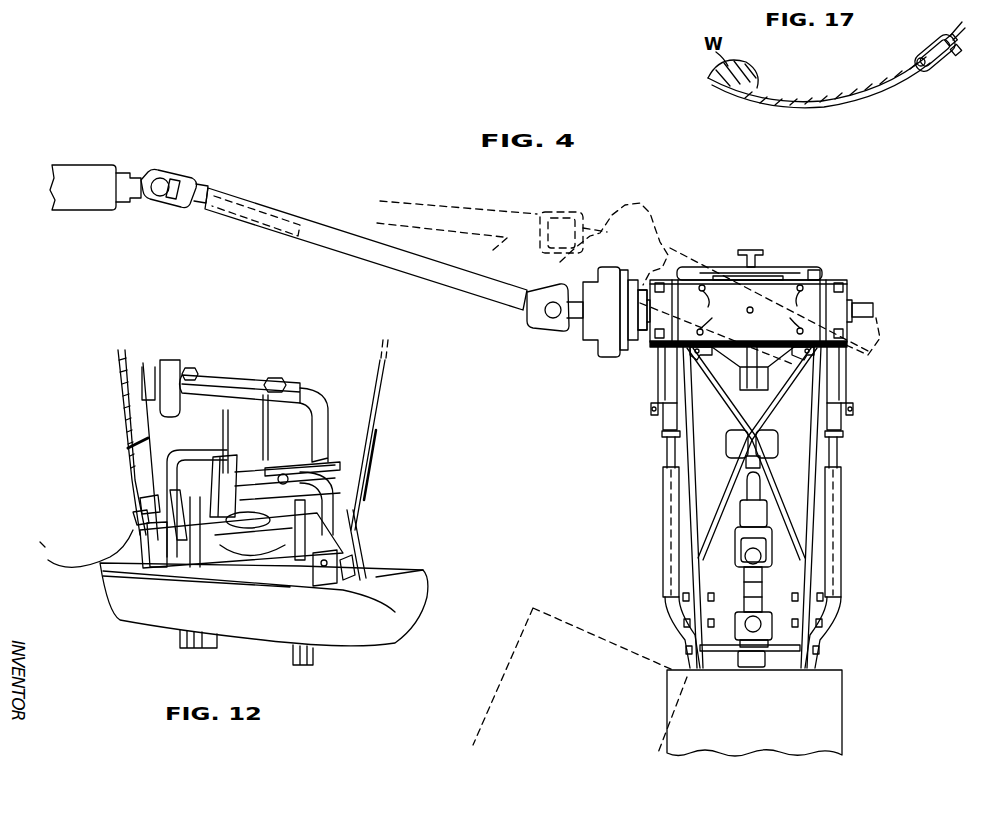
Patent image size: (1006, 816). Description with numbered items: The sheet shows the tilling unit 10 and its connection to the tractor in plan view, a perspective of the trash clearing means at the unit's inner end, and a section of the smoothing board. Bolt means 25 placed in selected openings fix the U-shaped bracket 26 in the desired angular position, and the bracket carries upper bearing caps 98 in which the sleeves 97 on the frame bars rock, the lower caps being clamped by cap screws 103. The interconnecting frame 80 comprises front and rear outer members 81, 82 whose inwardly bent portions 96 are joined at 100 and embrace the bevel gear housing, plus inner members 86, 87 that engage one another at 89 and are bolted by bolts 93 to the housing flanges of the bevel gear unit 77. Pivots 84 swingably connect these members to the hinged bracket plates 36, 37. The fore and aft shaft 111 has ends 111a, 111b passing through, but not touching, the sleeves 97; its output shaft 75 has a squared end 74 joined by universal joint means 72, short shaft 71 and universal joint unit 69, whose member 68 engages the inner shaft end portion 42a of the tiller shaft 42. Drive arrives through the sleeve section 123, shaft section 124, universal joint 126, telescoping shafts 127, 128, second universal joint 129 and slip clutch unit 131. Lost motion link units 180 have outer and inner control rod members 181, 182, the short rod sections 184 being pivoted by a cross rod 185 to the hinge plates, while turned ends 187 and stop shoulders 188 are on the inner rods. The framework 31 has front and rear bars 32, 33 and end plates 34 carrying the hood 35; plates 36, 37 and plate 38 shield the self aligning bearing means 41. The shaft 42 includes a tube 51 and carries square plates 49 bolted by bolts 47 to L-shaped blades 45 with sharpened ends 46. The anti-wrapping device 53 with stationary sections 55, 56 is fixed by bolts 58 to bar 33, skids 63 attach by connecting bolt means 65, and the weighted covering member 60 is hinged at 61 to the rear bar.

In FIG. 4, the tilling unit 10 is at (845, 708).
In FIG. 4, the bolt means 25 is at (764, 310).
In FIG. 4, the U-shaped bracket 26 is at (808, 270).
In FIG. 12, the framework 31 is at (363, 554).
In FIG. 12, the front bar 32 is at (374, 455).
In FIG. 17, the rear bar 33 is at (958, 52).
In FIG. 12, the rear bar 33 is at (125, 430).
In FIG. 12, the segmental end plate 34 is at (344, 588).
In FIG. 17, the hood 35 is at (950, 34).
In FIG. 4, the hood 35 is at (838, 733).
In FIG. 12, the hood 35 is at (366, 405).
In FIG. 12, the hinged bracket plate 36 is at (190, 562).
In FIG. 12, the hinged bracket plate 37 is at (298, 562).
In FIG. 12, the plate 38 is at (285, 542).
In FIG. 12, the self aligning bearing means 41 is at (215, 567).
In FIG. 12, the tiller shaft 42 is at (221, 434).
In FIG. 4, the inner tiller shaft end portion 42a is at (752, 672).
In FIG. 12, the L-shaped blade 45 is at (155, 388).
In FIG. 12, the sharpened end 46 is at (153, 362).
In FIG. 12, the bolt 47 is at (280, 478).
In FIG. 12, the square plate 49 is at (302, 387).
In FIG. 12, the tube 51 is at (268, 366).
In FIG. 12, the anti-wrapping device 53 is at (133, 518).
In FIG. 12, the stationary section 55 is at (130, 534).
In FIG. 12, the stationary section 56 is at (170, 540).
In FIG. 12, the bolt 58 is at (142, 503).
In FIG. 17, the covering member 60 is at (772, 107).
In FIG. 12, the covering member 60 is at (60, 567).
In FIG. 17, the hinge 61 is at (938, 63).
In FIG. 12, the hinge 61 is at (144, 446).
In FIG. 12, the skid 63 is at (352, 655).
In FIG. 12, the connecting bolt means 65 is at (325, 586).
In FIG. 4, the universal joint member 68 is at (768, 662).
In FIG. 4, the universal joint unit 69 is at (733, 613).
In FIG. 4, the short shaft 71 is at (760, 590).
In FIG. 4, the universal joint means 72 is at (777, 545).
In FIG. 4, the squared end 74 is at (746, 488).
In FIG. 4, the output shaft 75 is at (760, 470).
In FIG. 4, the bevel gear unit 77 is at (778, 427).
In FIG. 4, the interconnecting frame unit 80 is at (850, 465).
In FIG. 4, the front outer support frame member 81 is at (814, 494).
In FIG. 4, the rear outer support frame member 82 is at (688, 484).
In FIG. 4, the pivot 84 is at (683, 605).
In FIG. 4, the front inner member 86 is at (781, 502).
In FIG. 4, the rear inner member 87 is at (720, 522).
In FIG. 4, the engaging central portions 89 is at (730, 443).
In FIG. 4, the bolt 93 is at (700, 355).
In FIG. 4, the inwardly bent portion 96 is at (700, 267).
In FIG. 4, the sleeve 97 is at (848, 300).
In FIG. 4, the upper bearing cap 98 is at (852, 306).
In FIG. 4, the connection 100 is at (740, 254).
In FIG. 4, the cap screw 103 is at (660, 283).
In FIG. 4, the fore and aft shaft 111 is at (878, 318).
In FIG. 4, the shaft end 111a is at (874, 310).
In FIG. 4, the shaft end 111b is at (640, 300).
In FIG. 4, the sleeve section 123 is at (98, 165).
In FIG. 4, the shaft section 124 is at (128, 174).
In FIG. 4, the universal joint 126 is at (165, 170).
In FIG. 4, the shaft 127 is at (208, 186).
In FIG. 4, the tubular shaft 128 is at (473, 283).
In FIG. 4, the second universal joint 129 is at (537, 330).
In FIG. 4, the slip clutch unit 131 is at (585, 336).
In FIG. 4, the lost motion link unit 180 is at (662, 525).
In FIG. 4, the outer control rod member 181 is at (663, 566).
In FIG. 4, the inner control rod member 182 is at (667, 443).
In FIG. 4, the short rod section 184 is at (683, 628).
In FIG. 4, the cross rod 185 is at (725, 652).
In FIG. 4, the turned end 187 is at (651, 406).
In FIG. 4, the stop shoulder 188 is at (843, 431).